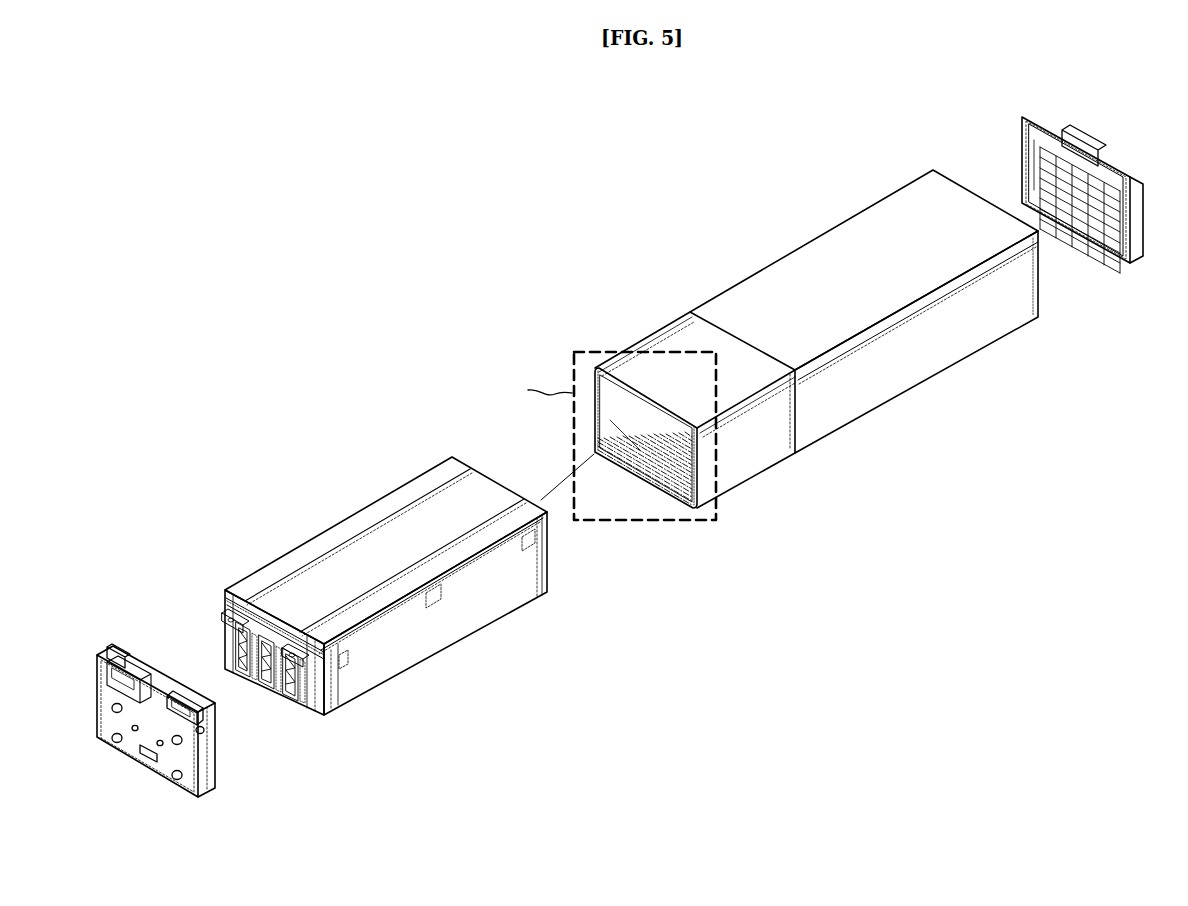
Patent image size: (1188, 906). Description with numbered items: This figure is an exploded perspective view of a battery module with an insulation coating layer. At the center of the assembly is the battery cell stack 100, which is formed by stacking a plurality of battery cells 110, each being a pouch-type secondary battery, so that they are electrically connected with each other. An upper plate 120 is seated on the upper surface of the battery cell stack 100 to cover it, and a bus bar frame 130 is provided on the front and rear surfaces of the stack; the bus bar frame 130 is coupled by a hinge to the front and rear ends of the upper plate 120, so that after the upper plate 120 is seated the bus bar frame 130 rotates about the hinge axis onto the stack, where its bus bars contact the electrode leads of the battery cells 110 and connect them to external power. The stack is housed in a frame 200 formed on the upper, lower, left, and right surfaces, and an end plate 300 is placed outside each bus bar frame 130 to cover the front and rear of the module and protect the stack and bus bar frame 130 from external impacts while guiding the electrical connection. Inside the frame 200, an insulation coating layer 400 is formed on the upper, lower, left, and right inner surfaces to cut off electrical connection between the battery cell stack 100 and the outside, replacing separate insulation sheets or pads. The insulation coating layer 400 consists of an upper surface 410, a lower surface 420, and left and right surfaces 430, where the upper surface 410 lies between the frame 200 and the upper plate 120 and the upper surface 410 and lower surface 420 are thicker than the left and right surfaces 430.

The battery cell stack 100 is at (377, 583).
The battery cell 110 is at (460, 620).
The upper plate 120 is at (380, 507).
The bus bar frame 130 is at (225, 602).
The frame 200 is at (816, 254).
The end plate 300 is at (1080, 143).
The insulation coating layer 400 is at (709, 457).
The upper surface of the insulation coating layer 410 is at (680, 387).
The lower surface of the insulation coating layer 420 is at (657, 473).
The left and right surfaces of the insulation coating layer 430 is at (768, 422).